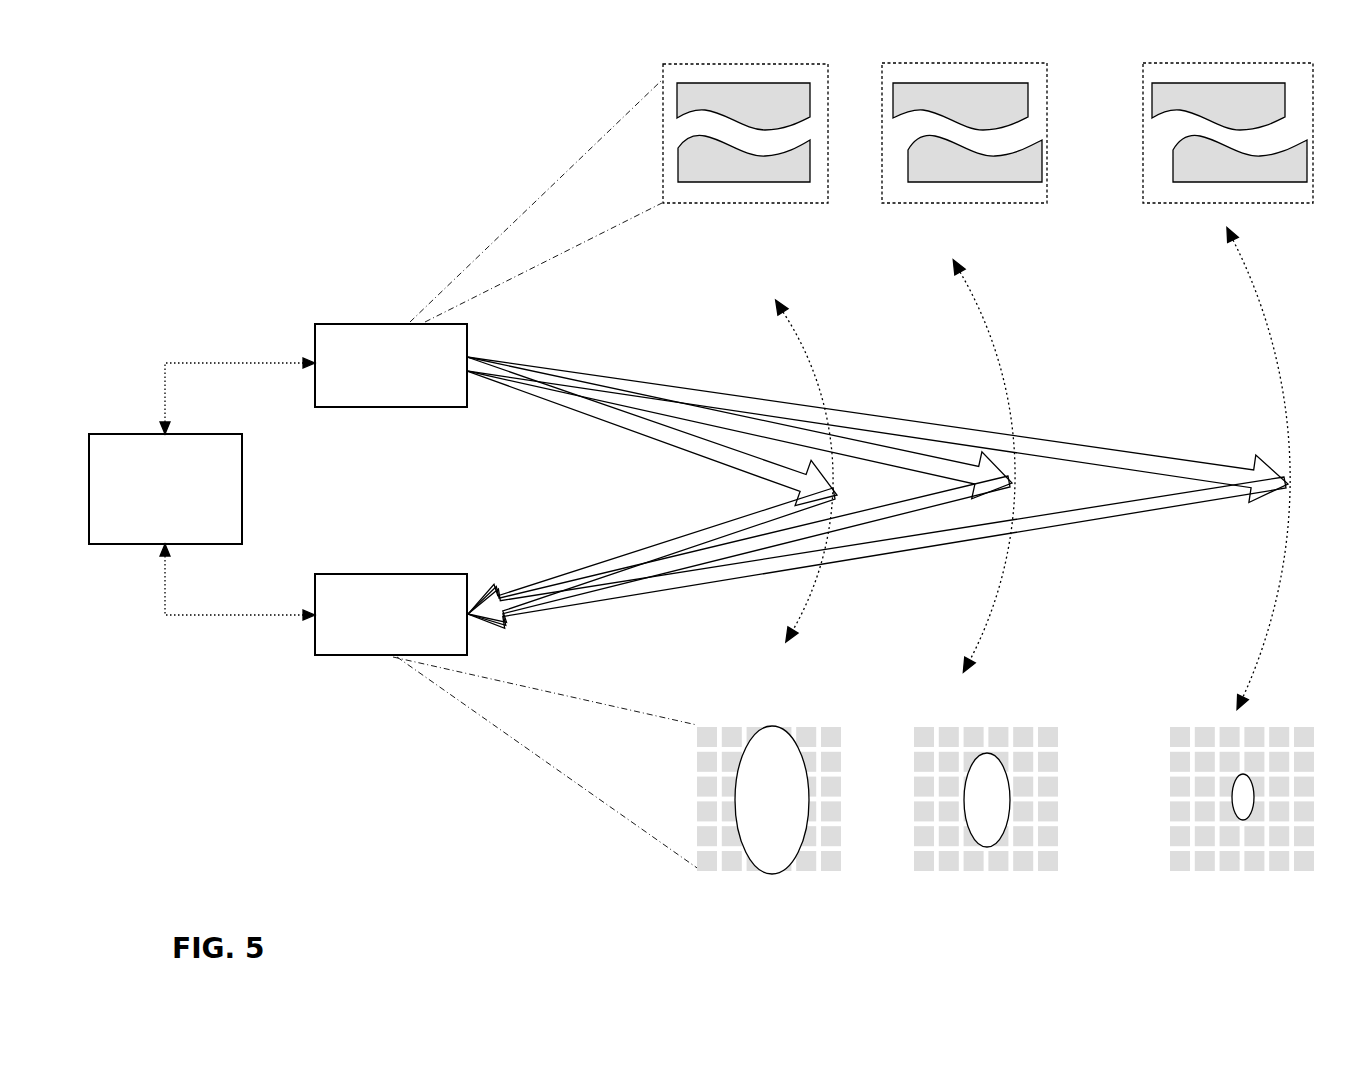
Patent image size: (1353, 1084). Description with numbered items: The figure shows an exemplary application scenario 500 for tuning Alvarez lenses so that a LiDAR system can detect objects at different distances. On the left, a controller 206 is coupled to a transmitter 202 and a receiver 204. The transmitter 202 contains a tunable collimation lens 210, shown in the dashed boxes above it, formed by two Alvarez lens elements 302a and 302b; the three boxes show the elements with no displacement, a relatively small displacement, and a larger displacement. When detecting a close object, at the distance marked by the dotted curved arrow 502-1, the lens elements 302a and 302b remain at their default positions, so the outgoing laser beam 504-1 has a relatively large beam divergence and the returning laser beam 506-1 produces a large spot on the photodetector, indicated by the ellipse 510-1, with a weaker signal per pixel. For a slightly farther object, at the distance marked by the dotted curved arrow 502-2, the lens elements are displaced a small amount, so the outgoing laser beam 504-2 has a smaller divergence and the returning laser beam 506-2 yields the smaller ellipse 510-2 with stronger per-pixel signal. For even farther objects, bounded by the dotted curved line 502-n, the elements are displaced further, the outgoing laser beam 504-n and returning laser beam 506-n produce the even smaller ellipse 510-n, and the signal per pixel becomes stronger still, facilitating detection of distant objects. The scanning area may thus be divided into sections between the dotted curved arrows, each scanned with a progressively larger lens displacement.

The application scenario 500 is at (219, 78).
The transmitter 202 is at (488, 243).
The receiver 204 is at (507, 722).
The controller 206 is at (202, 489).
The tunable collimation lens 210 is at (662, 80).
The lens element 302a is at (810, 176).
The lens element 302b is at (810, 95).
The dotted curved arrow 502-1 is at (827, 408).
The dotted curved arrow 502-2 is at (993, 338).
The dotted curved line 502-n is at (1266, 322).
The outgoing laser beam 504-1 is at (695, 432).
The outgoing laser beam 504-2 is at (897, 450).
The outgoing laser beam 504-n is at (1208, 466).
The returning laser beam 506-1 is at (703, 537).
The returning laser beam 506-2 is at (897, 517).
The returning laser beam 506-n is at (1202, 502).
The ellipse 510-1 is at (774, 738).
The ellipse 510-2 is at (987, 754).
The ellipse 510-n is at (1243, 775).